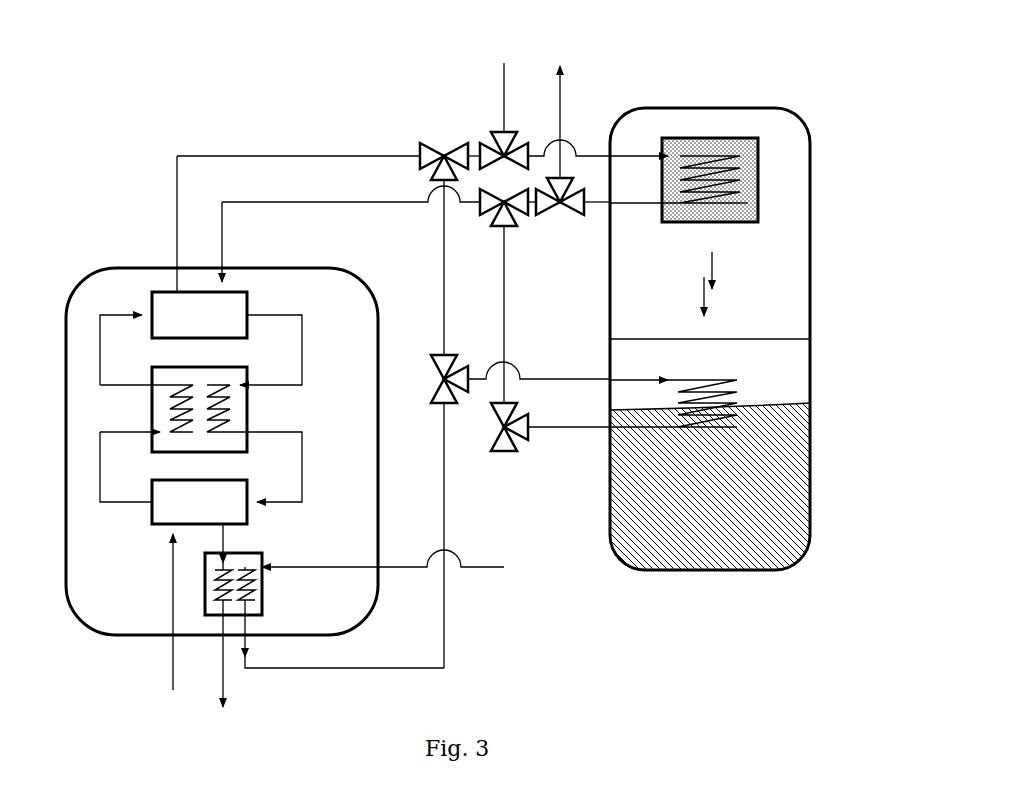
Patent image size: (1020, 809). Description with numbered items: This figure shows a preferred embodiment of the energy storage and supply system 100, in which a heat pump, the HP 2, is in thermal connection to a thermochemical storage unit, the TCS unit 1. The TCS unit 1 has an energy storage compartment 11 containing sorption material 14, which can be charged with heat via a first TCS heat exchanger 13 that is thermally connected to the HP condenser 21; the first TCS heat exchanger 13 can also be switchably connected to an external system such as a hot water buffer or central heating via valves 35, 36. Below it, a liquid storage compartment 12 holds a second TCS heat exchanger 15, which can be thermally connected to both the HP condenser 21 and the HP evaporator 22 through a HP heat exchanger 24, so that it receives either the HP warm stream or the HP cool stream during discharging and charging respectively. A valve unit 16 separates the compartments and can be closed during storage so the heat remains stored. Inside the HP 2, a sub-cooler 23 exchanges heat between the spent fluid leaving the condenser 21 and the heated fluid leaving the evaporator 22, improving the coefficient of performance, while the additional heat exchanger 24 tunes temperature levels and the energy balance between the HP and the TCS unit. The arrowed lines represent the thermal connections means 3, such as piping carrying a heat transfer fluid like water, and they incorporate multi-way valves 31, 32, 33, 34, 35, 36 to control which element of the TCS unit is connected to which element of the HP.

The heat pump system 100 is at (97, 49).
The TCS unit 1 is at (754, 319).
The HP 2 is at (74, 277).
The thermal connections means 3 is at (363, 146).
The energy storage compartment 11 is at (810, 140).
The liquid storage compartment 12 is at (808, 416).
The first TCS heat exchanger 13 is at (757, 174).
The sorption material 14 is at (748, 205).
The second TCS heat exchanger 15 is at (763, 406).
The valve unit 16 is at (690, 287).
The HP condenser 21 is at (210, 329).
The HP evaporator 22 is at (210, 515).
The sub-cooler 23 is at (276, 420).
The HP heat exchanger 24 is at (286, 599).
The multi-way valve 31 is at (455, 141).
The multi-way valve 32 is at (440, 387).
The multi-way valve 33 is at (486, 233).
The multi-way valve 34 is at (494, 436).
The multi-way valve 35 is at (514, 183).
The multi-way valve 36 is at (569, 238).